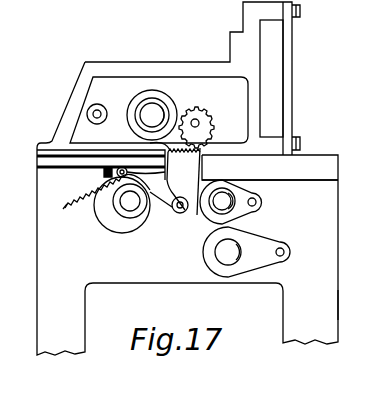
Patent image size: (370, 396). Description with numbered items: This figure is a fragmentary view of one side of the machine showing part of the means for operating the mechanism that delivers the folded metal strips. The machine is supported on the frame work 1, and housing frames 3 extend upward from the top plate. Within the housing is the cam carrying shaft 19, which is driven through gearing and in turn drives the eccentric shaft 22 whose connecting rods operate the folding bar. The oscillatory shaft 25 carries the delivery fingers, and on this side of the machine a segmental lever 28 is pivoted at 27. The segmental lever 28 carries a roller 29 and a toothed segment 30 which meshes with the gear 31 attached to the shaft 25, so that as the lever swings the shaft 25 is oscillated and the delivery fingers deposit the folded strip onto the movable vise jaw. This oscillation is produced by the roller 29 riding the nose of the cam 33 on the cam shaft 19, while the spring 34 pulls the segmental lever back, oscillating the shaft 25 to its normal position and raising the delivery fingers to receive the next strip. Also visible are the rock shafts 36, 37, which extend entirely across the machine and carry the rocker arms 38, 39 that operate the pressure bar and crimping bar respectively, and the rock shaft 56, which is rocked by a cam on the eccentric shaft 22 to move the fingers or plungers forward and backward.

The frame work 1 is at (322, 303).
The housing frames 3 is at (186, 63).
The shaft 19 is at (131, 206).
The eccentric shaft 22 is at (156, 112).
The oscillatory shaft 25 is at (200, 123).
The pivot 27 is at (181, 212).
The segmental lever 28 is at (184, 170).
The roller 29 is at (100, 174).
The toothed segment 30 is at (160, 143).
The gear 31 is at (205, 114).
The cam 33 is at (114, 228).
The spring 34 is at (72, 207).
The rock shaft 36 is at (240, 184).
The rock shaft 37 is at (216, 254).
The rocker arms 38 is at (240, 206).
The rocker arms 39 is at (263, 264).
The rock shaft 56 is at (100, 110).